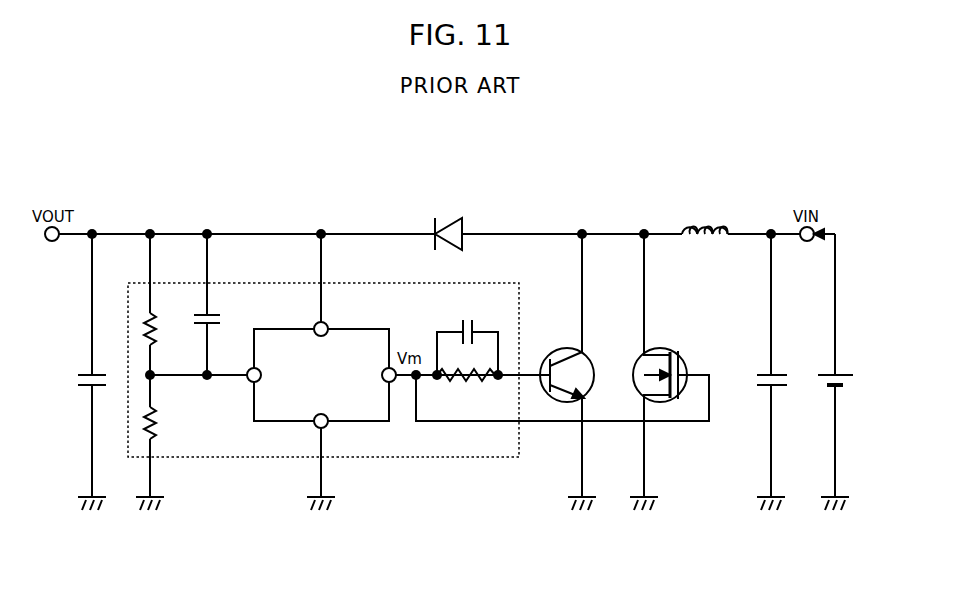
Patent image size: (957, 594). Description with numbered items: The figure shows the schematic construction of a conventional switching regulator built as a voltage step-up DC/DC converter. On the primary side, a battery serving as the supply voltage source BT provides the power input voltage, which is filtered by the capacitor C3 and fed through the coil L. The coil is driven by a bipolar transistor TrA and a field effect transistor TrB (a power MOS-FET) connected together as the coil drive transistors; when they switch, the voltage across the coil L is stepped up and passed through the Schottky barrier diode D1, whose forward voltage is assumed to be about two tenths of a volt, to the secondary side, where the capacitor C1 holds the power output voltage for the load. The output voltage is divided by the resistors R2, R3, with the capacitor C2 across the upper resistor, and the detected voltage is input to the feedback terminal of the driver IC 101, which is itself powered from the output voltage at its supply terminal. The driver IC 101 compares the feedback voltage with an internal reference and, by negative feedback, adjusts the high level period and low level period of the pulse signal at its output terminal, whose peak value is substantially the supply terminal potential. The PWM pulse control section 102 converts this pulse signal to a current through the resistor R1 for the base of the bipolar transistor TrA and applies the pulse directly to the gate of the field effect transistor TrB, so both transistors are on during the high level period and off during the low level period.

The driver IC 101 is at (344, 329).
The PWM pulse control section 102 is at (416, 457).
The capacitor C1 is at (80, 365).
The capacitor C2 is at (218, 304).
The capacitor C3 is at (757, 365).
The resistor R1 is at (467, 363).
The resistor R2 is at (162, 304).
The resistor R3 is at (162, 436).
The Schottky barrier diode D1 is at (448, 224).
The coil L is at (705, 217).
The supply voltage source BT is at (840, 365).
The bipolar transistor TrA is at (564, 365).
The field effect transistor TrB is at (664, 365).